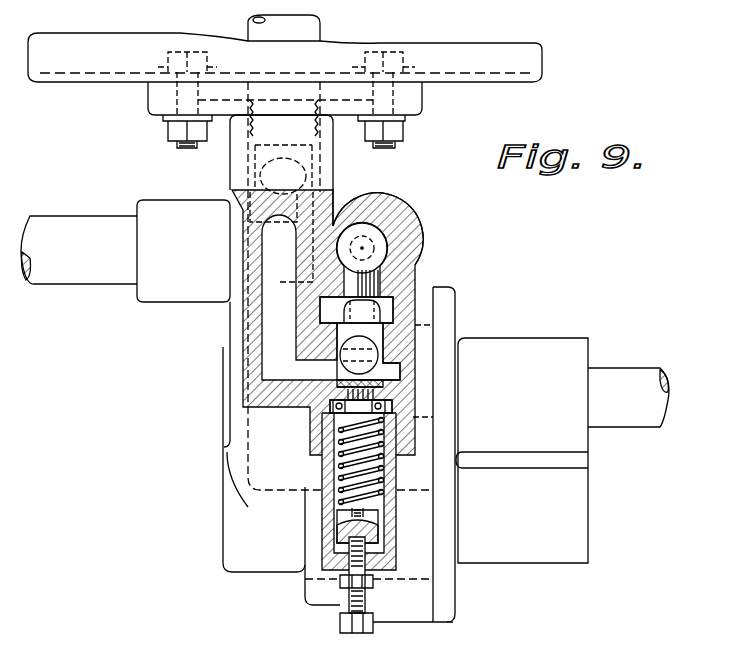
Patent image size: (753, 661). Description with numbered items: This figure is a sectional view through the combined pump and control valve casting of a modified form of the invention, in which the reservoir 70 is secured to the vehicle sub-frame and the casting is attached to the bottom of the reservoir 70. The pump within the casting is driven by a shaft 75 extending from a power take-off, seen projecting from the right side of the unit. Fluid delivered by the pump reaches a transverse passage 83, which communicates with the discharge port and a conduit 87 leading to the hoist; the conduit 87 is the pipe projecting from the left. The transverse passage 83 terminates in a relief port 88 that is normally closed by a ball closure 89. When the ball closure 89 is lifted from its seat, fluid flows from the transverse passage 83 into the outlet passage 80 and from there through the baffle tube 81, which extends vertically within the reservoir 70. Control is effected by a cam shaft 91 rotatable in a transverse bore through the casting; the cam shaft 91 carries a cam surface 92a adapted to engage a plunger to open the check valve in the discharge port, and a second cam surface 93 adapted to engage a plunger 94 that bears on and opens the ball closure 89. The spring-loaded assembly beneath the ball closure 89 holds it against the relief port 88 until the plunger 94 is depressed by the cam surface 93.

The reservoir 70 is at (535, 60).
The baffle tube 81 is at (320, 24).
The conduit 87 is at (40, 230).
The outlet passage 80 is at (266, 351).
The cam surface 93 is at (414, 225).
The cam shaft 91 is at (386, 236).
The cam surface 92a is at (347, 208).
The plunger 94 is at (388, 296).
The transverse passage 83 is at (400, 312).
The relief port 88 is at (385, 338).
The ball closure 89 is at (378, 362).
The shaft 75 is at (617, 377).